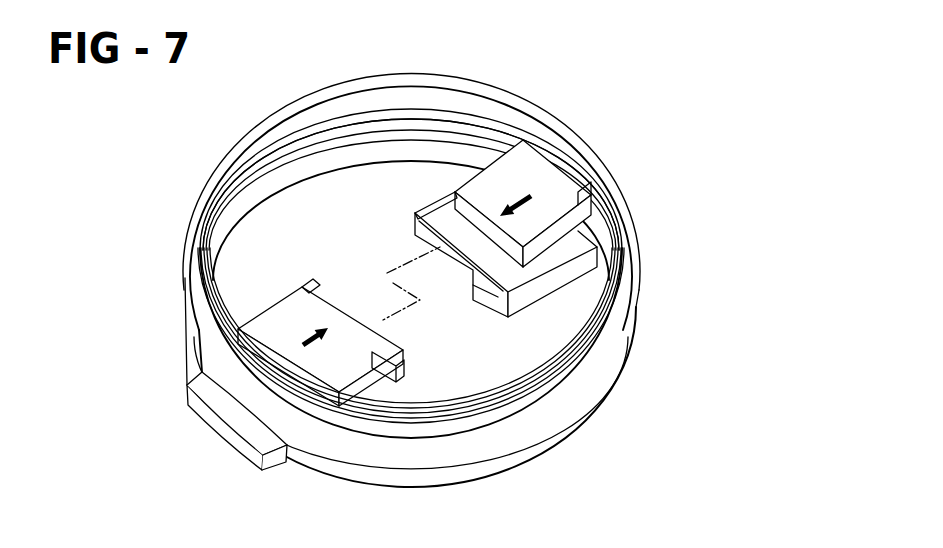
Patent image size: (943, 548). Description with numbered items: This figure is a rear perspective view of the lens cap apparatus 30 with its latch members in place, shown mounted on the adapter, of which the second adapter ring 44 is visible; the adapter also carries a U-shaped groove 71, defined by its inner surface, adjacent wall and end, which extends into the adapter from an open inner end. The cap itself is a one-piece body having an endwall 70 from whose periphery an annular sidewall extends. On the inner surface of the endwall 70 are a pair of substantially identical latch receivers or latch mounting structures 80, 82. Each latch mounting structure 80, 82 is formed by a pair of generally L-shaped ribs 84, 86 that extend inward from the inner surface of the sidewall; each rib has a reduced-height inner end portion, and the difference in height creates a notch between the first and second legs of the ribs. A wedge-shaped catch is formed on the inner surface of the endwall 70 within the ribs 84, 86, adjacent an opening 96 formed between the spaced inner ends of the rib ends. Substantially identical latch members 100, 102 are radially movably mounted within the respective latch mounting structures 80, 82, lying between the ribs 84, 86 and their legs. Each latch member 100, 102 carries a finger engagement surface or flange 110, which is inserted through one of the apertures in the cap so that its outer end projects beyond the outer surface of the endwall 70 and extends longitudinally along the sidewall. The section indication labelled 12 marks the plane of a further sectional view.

The lens cap apparatus 30 is at (455, 42).
The second adapter ring 44 is at (192, 327).
The endwall 70 is at (323, 192).
The U-shaped groove 71 is at (456, 148).
The latch mounting structure 80 is at (392, 394).
The latch mounting structure 82 is at (549, 304).
The L-shaped rib 84 is at (301, 279).
The L-shaped rib 86 is at (435, 208).
The opening 96 is at (466, 264).
The latch member 100 is at (283, 327).
The latch member 102 is at (560, 188).
The flange 110 is at (253, 455).
The section line 12 is at (580, 134).